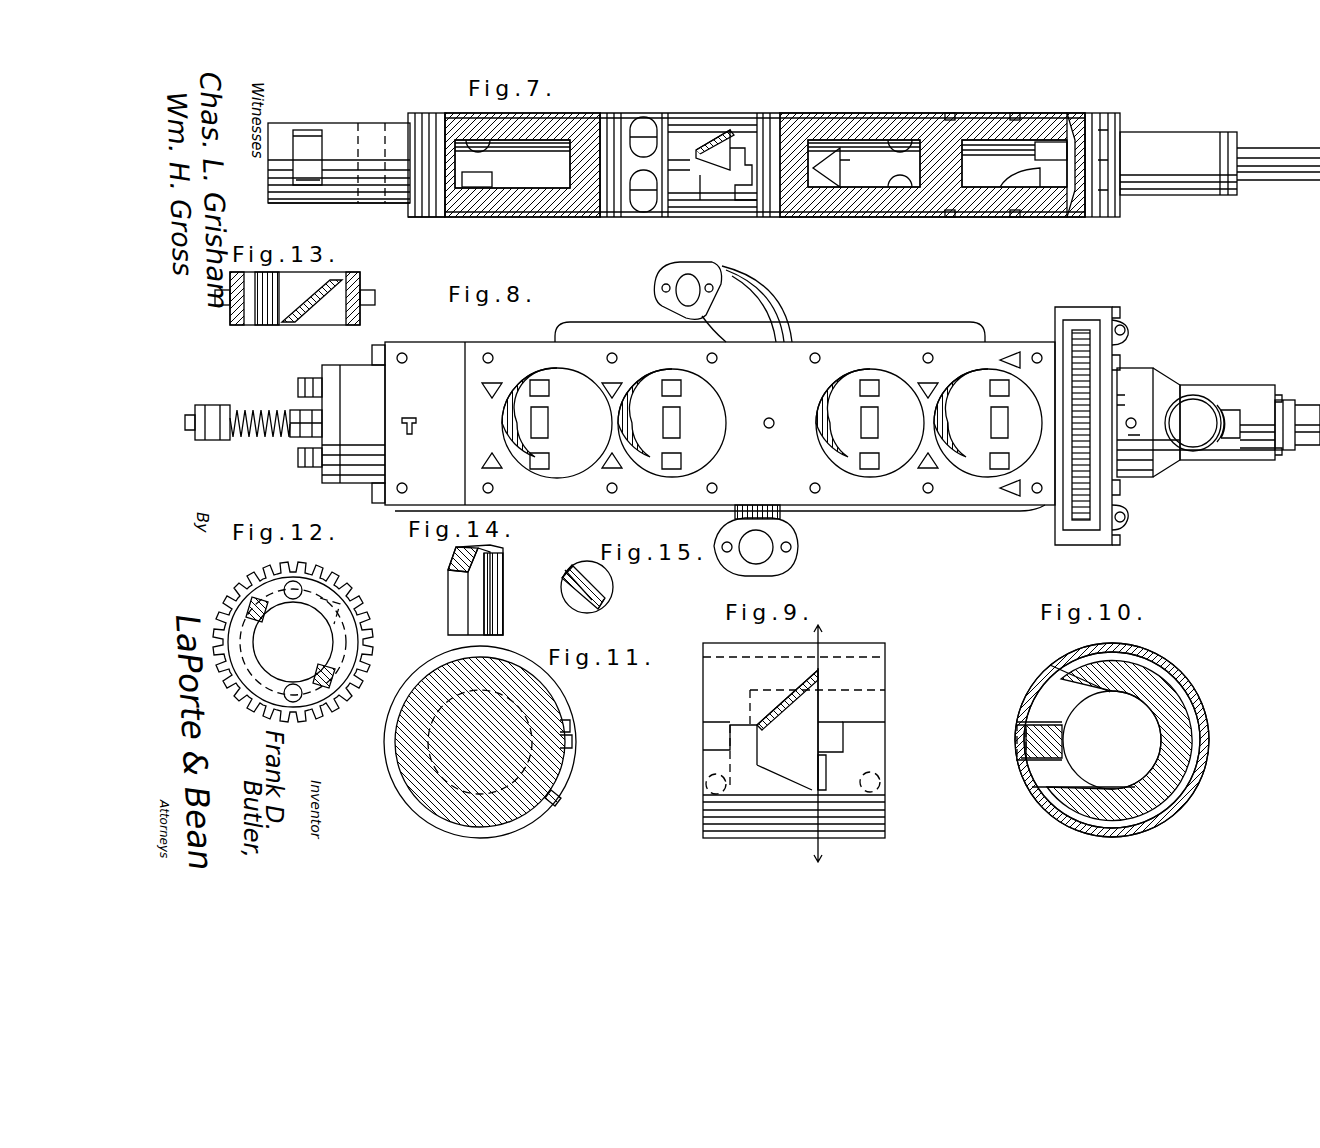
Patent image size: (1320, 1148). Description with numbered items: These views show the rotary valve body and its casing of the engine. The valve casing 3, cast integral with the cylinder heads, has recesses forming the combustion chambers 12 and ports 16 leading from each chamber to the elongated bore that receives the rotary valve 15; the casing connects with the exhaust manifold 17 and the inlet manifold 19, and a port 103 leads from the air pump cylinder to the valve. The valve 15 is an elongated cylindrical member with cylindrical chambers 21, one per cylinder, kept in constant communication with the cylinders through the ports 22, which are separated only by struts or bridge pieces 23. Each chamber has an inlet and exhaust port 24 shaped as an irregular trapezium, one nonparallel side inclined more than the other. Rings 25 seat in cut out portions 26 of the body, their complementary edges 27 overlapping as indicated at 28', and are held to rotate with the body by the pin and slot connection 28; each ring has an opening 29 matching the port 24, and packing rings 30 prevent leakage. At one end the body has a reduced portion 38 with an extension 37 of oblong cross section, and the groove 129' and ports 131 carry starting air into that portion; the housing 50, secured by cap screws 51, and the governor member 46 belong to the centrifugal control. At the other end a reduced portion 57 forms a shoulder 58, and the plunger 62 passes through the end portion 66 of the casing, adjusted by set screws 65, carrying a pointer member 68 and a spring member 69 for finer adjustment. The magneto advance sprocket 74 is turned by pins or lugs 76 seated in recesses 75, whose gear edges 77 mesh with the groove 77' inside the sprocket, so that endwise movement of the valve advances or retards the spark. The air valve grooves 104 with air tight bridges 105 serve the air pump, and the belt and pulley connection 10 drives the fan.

In FIG. 8, the cylinder head and rotary valve casing 3 is at (756, 426).
In FIG. 9, the belt and pulley connection 10 is at (817, 743).
In FIG. 8, the combustion chambers 12 is at (514, 408).
In FIG. 7, the rotary valve 15 is at (800, 120).
In FIG. 11, the rotary valve 15 is at (556, 714).
In FIG. 10, the rotary valve 15 is at (1196, 716).
In FIG. 8, the ports 16 is at (568, 442).
In FIG. 8, the exhaust manifold 17 is at (780, 300).
In FIG. 8, the inlet manifold 19 is at (797, 532).
In FIG. 7, the cylindrical chambers 21 is at (761, 164).
In FIG. 11, the cylindrical chambers 21 is at (432, 800).
In FIG. 10, the cylindrical chambers 21 is at (1195, 750).
In FIG. 7, the ports 22 is at (646, 200).
In FIG. 7, the struts or bridge pieces 23 is at (654, 132).
In FIG. 7, the inlet and exhaust ports 24 is at (834, 219).
In FIG. 10, the inlet and exhaust ports 24 is at (1085, 698).
In FIG. 7, the rings 25 is at (582, 218).
In FIG. 11, the rings 25 is at (384, 746).
In FIG. 9, the rings 25 is at (898, 740).
In FIG. 10, the rings 25 is at (1186, 690).
In FIG. 7, the cut out portions 26 is at (522, 218).
In FIG. 11, the cut out portions 26 is at (428, 676).
In FIG. 10, the cut out portions 26 is at (1200, 790).
In FIG. 7, the complementary edges 27 is at (754, 140).
In FIG. 11, the complementary edges 27 is at (575, 752).
In FIG. 9, the complementary edges 27 is at (712, 768).
In FIG. 7, the pin and slot connection 28 is at (794, 169).
In FIG. 11, the pin and slot connection 28 is at (596, 719).
In FIG. 9, the pin and slot connection 28 is at (751, 743).
In FIG. 10, the pin and slot connection 28 is at (1023, 763).
In FIG. 11, the overlap of ring edges 28' is at (589, 793).
In FIG. 9, the overlap of ring edges 28' is at (803, 805).
In FIG. 7, the opening 29 is at (728, 134).
In FIG. 9, the opening 29 is at (787, 729).
In FIG. 10, the opening 29 is at (1038, 686).
In FIG. 7, the packing rings 30 is at (615, 219).
In FIG. 7, the extension 37 is at (1290, 184).
In FIG. 7, the reduced portion 38 is at (1205, 196).
In FIG. 8, the governor member 46 is at (1194, 466).
In FIG. 7, the housing 50 is at (420, 114).
In FIG. 8, the housing 50 is at (1252, 390).
In FIG. 8, the cap screws 51 is at (1284, 456).
In FIG. 7, the reduced portion 57 is at (349, 204).
In FIG. 7, the shoulder 58 is at (406, 220).
In FIG. 8, the plunger 62 is at (262, 415).
In FIG. 8, the set screws 65 is at (306, 470).
In FIG. 8, the end portion 66 is at (332, 368).
In FIG. 8, the pointer member 68 is at (212, 404).
In FIG. 8, the spring member 69 is at (266, 438).
In FIG. 13, the sprocket 74 is at (362, 290).
In FIG. 12, the sprocket 74 is at (360, 602).
In FIG. 7, the recesses 75 is at (386, 123).
In FIG. 14, the pins or lugs 76 is at (450, 606).
In FIG. 15, the pins or lugs 76 is at (610, 596).
In FIG. 15, the gear edges 77 is at (562, 593).
In FIG. 13, the groove 77' is at (282, 318).
In FIG. 12, the groove 77' is at (303, 633).
In FIG. 8, the port 103 is at (397, 458).
In FIG. 7, the valve ports or grooves 104 is at (316, 162).
In FIG. 7, the air tight bridges 105 is at (312, 123).
In FIG. 7, the groove 129' is at (1124, 176).
In FIG. 7, the ports 131 is at (1100, 190).